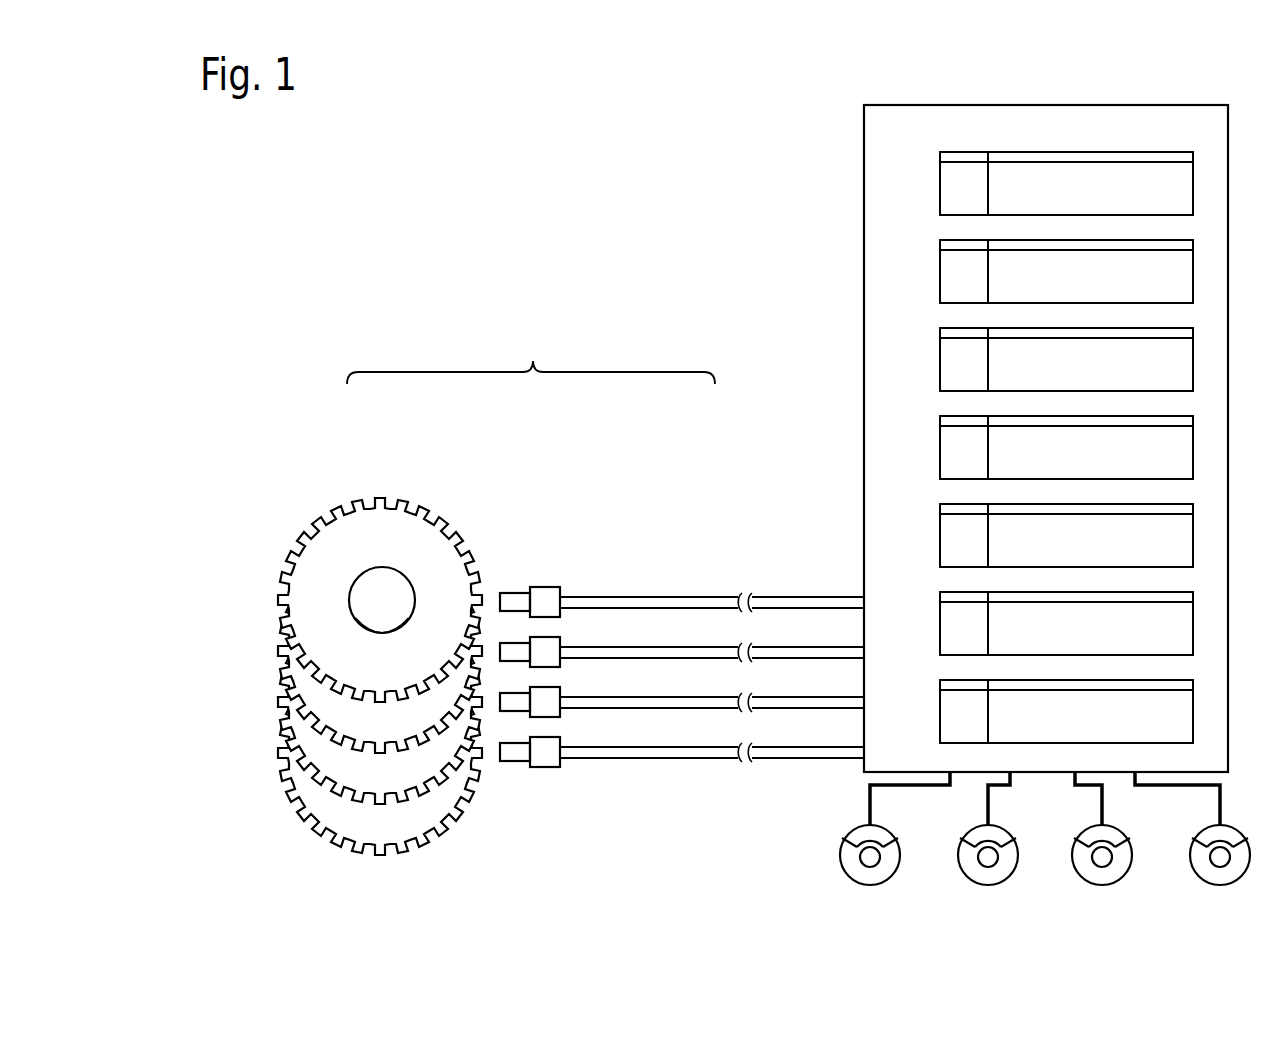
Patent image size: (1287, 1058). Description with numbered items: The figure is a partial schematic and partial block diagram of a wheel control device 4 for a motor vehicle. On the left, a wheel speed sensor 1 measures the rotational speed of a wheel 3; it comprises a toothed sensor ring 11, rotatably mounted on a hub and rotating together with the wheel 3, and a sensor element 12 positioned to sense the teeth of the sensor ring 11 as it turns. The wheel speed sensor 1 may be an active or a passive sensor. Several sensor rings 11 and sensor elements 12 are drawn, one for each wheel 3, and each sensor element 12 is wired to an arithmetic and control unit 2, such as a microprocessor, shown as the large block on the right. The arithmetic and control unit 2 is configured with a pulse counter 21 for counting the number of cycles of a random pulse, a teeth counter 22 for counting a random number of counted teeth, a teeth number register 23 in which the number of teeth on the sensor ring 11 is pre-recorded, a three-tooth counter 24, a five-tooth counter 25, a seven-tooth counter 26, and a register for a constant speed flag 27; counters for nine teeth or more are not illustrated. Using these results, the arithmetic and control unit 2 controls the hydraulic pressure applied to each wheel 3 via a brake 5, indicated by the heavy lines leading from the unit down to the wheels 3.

The wheel speed sensor 1 is at (531, 356).
The arithmetic and control unit 2 is at (864, 213).
The wheel 3 is at (850, 875).
The wheel control device 4 is at (380, 199).
The brake 5 is at (852, 832).
The sensor ring 11 is at (412, 497).
The sensor element 12 is at (549, 585).
The pulse counter 21 is at (940, 181).
The teeth counter 22 is at (940, 269).
The teeth number register 23 is at (940, 357).
The 3T counter 24 is at (940, 445).
The 5T counter 25 is at (940, 533).
The 7T counter 26 is at (940, 621).
The constant speed flag register 27 is at (940, 709).